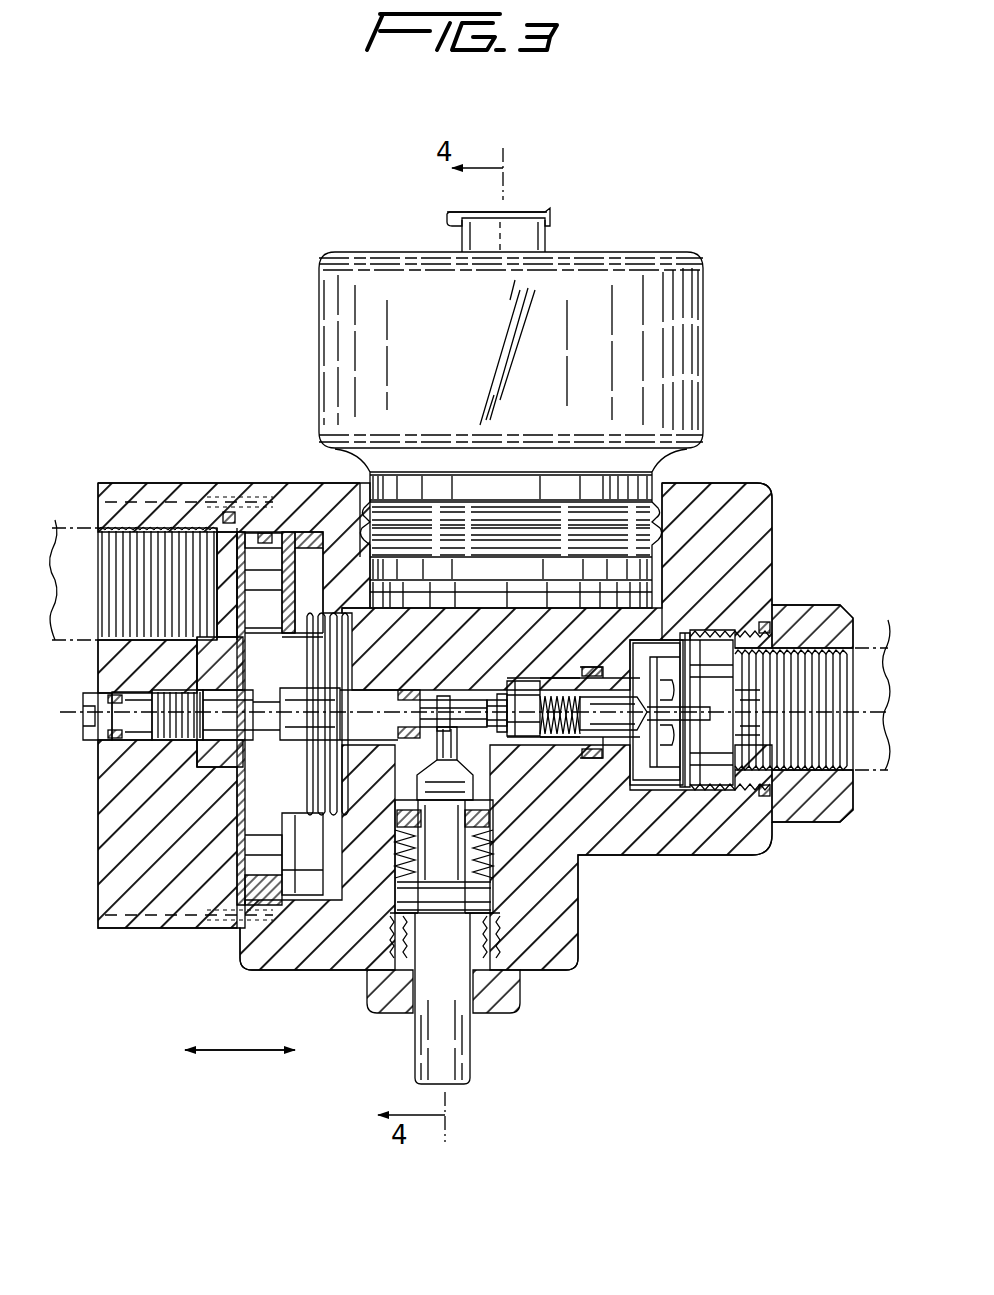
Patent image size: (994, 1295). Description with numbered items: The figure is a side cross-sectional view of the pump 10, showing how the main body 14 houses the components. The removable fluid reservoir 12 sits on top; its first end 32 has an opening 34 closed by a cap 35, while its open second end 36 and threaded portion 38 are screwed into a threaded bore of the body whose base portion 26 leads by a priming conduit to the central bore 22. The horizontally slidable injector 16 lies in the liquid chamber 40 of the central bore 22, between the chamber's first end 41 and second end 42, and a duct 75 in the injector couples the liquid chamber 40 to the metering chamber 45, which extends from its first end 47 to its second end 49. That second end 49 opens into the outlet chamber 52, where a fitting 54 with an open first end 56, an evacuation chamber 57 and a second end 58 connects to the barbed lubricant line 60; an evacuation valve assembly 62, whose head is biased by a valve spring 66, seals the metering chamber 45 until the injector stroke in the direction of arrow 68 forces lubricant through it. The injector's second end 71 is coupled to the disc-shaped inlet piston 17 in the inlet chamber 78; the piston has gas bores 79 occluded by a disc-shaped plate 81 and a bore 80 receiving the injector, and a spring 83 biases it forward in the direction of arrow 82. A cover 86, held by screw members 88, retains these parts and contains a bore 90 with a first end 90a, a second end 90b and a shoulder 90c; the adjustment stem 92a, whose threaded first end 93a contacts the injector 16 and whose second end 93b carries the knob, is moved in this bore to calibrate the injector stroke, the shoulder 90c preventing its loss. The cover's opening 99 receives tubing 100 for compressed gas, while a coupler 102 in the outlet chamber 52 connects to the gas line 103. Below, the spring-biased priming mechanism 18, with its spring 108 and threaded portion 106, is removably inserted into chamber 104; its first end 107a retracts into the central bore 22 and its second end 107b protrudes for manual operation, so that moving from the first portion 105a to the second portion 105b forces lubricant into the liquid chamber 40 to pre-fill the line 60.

The pump 10 is at (250, 300).
The fluid reservoir 12 is at (462, 358).
The main body 14 is at (763, 490).
The injector 16 is at (386, 724).
The inlet piston 17 is at (265, 882).
The priming mechanism 18 is at (482, 1082).
The central bore 22 is at (343, 700).
The base portion 26 is at (650, 602).
The first end 32 is at (672, 256).
The opening 34 is at (538, 250).
The cap 35 is at (516, 212).
The open second end 36 is at (672, 577).
The threaded portion 38 is at (642, 522).
The liquid chamber 40 is at (406, 700).
The first end 41 is at (405, 740).
The second end 42 is at (430, 700).
The metering chamber 45 is at (496, 740).
The first end 47 is at (467, 738).
The second end 49 is at (500, 700).
The outlet chamber 52 is at (733, 787).
The fitting 54 is at (652, 788).
The open first end 56 is at (520, 700).
The evacuation chamber 57 is at (632, 788).
The second end 58 is at (690, 792).
The lubricant line 60 is at (813, 756).
The evacuation valve assembly 62 is at (545, 700).
The valve spring 66 is at (610, 700).
The arrow 68 is at (262, 1058).
The second end 71 is at (206, 768).
The duct 75 is at (456, 700).
The inlet chamber 78 is at (230, 900).
The bore 79 is at (241, 530).
The bore 80 is at (240, 828).
The disc-shaped plate 81 is at (262, 530).
The arrow 82 is at (196, 1058).
The spring 83 is at (332, 580).
The cover 86 is at (115, 872).
The screw members 88 is at (104, 500).
The bore 90 is at (130, 742).
The first end 90a is at (112, 738).
The second end 90b is at (232, 742).
The shoulder 90c is at (176, 742).
The adjustment stem 92a is at (86, 708).
The threaded first end 93a is at (190, 700).
The second end 93b is at (100, 700).
The opening 99 is at (150, 525).
The tubing 100 is at (66, 540).
The coupler 102 is at (808, 610).
The gas line 103 is at (897, 612).
The chamber 104 is at (395, 994).
The first portion 105a is at (492, 932).
The second portion 105b is at (437, 748).
The threaded portion 106 is at (514, 985).
The first end 107a is at (432, 772).
The second end 107b is at (456, 1040).
The spring 108 is at (486, 862).